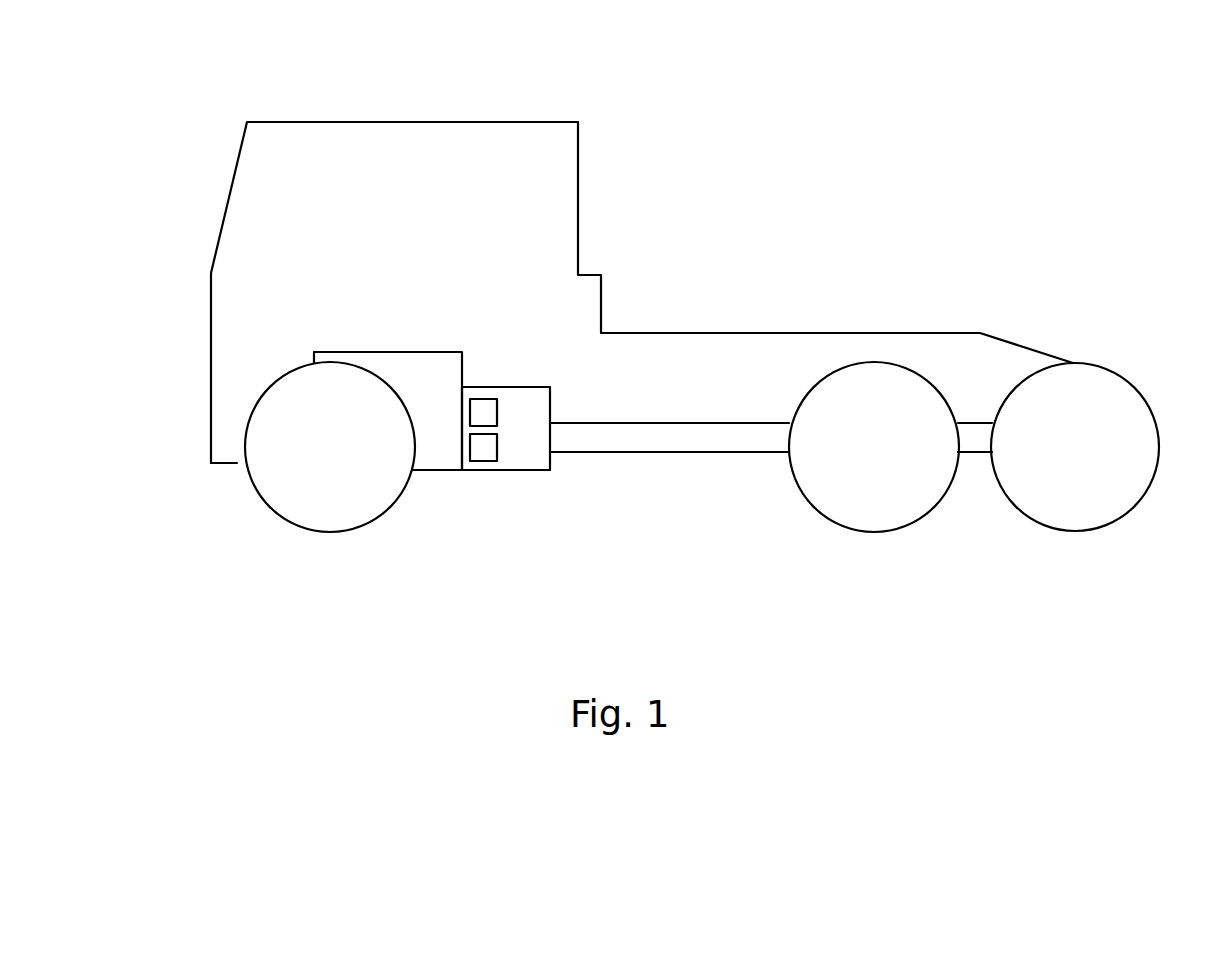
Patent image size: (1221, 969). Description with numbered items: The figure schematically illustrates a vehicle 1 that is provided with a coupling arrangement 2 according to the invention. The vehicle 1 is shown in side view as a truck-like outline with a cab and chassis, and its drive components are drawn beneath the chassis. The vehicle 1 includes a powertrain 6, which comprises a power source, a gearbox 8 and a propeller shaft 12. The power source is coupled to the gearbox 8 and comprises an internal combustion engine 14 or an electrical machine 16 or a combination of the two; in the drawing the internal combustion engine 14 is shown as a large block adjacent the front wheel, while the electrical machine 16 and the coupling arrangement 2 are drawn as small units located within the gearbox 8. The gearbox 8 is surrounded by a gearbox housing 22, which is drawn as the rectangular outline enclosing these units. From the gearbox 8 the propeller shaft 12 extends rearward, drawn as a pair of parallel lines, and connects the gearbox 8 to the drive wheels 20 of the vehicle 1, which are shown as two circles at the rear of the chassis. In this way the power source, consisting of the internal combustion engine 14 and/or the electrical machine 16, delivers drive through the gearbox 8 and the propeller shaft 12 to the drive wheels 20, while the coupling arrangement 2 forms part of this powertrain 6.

The vehicle 1 is at (683, 103).
The coupling arrangement 2 is at (483, 463).
The powertrain 6 is at (473, 563).
The gearbox 8 is at (507, 387).
The propeller shaft 12 is at (702, 453).
The internal combustion engine 14 is at (357, 350).
The electrical machine 16 is at (485, 398).
The drive wheels 20 is at (920, 517).
The gearbox housing 22 is at (502, 472).